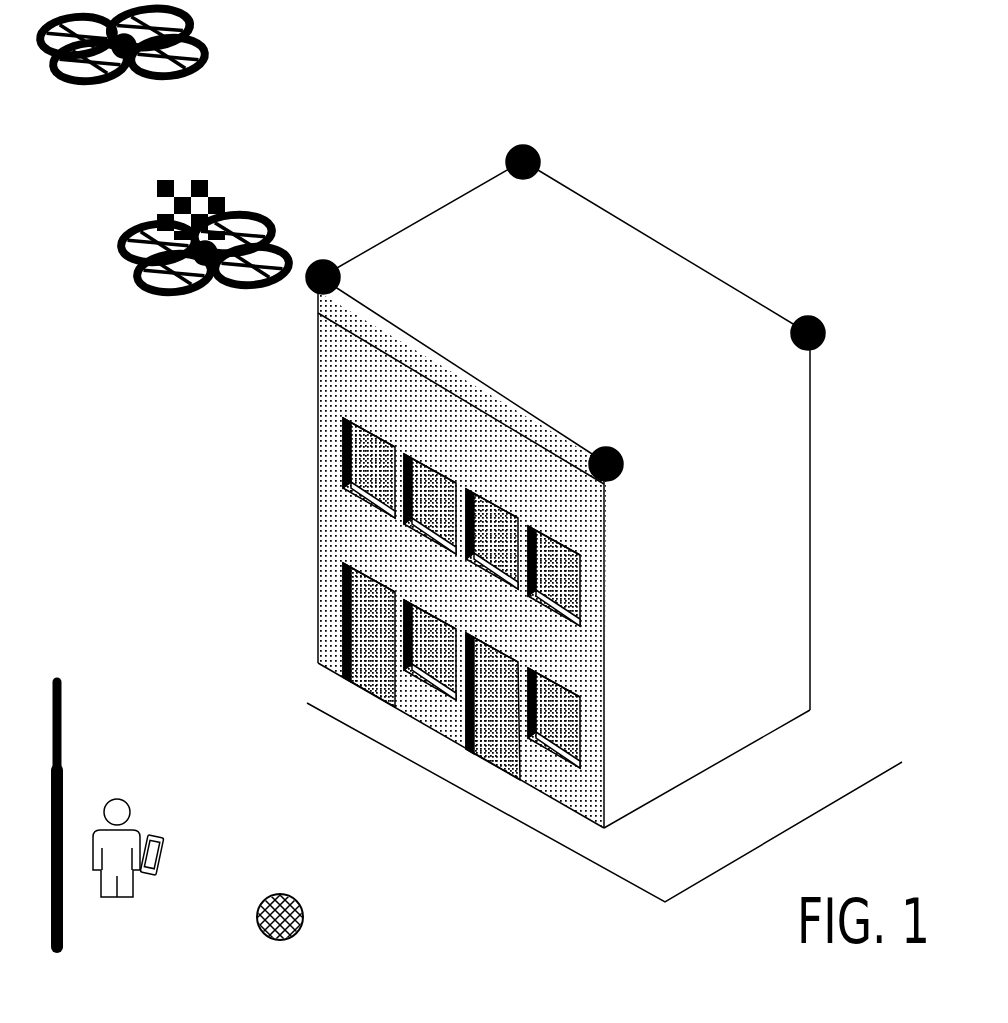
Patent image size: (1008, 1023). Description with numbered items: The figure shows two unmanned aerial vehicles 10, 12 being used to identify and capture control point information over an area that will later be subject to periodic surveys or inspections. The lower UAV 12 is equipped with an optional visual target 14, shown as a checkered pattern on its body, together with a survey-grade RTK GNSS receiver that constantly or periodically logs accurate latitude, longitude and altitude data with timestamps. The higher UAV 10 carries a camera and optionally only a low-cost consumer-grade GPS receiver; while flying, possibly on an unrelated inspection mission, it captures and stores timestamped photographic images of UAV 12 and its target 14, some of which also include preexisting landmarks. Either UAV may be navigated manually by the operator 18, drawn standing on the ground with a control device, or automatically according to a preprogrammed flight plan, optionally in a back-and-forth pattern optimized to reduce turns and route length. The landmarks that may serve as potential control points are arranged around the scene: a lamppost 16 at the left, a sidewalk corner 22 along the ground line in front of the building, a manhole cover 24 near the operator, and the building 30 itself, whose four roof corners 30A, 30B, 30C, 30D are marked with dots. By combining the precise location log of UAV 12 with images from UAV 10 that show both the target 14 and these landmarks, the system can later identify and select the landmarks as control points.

The unmanned aerial vehicle 10 is at (140, 45).
The unmanned aerial vehicle 12 is at (205, 227).
The visual target 14 is at (174, 183).
The lamppost 16 is at (31, 814).
The operator 18 is at (128, 871).
The sidewalk corner 22 is at (604, 802).
The manhole cover 24 is at (311, 920).
The building 30 is at (587, 454).
The corner of building 30A is at (325, 234).
The corner of building 30B is at (550, 129).
The corner of building 30C is at (623, 494).
The corner of building 30D is at (829, 356).